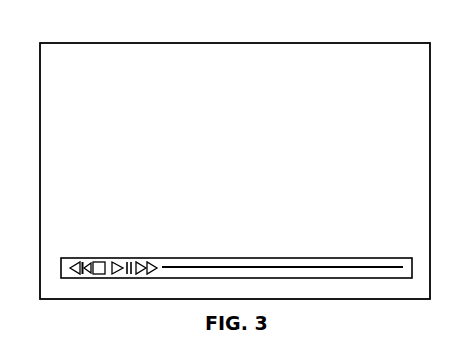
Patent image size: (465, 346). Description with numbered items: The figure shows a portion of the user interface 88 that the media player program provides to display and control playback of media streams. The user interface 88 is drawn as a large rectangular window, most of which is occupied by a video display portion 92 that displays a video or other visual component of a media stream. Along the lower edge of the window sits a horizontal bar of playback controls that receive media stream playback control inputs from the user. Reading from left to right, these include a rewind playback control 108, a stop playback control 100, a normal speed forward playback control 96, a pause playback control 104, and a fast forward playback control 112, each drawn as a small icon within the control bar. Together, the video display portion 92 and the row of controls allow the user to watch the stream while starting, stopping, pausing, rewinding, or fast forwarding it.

The user interface 88 is at (50, 38).
The video display portion 92 is at (242, 162).
The normal speed forward playback control 96 is at (107, 258).
The stop playback control 100 is at (96, 278).
The pause playback control 104 is at (122, 278).
The rewind playback control 108 is at (74, 258).
The fast forward playback control 112 is at (130, 258).